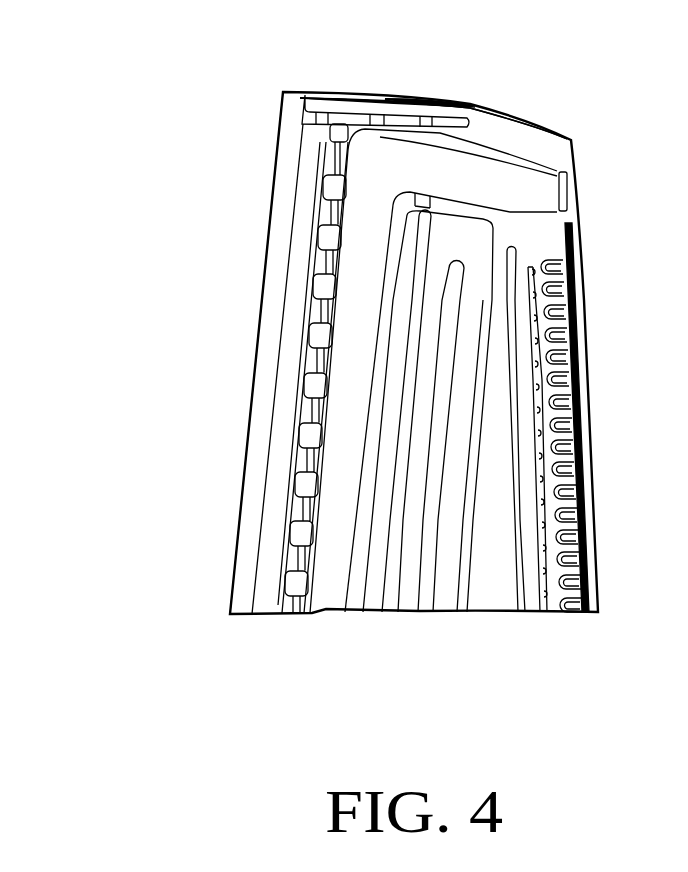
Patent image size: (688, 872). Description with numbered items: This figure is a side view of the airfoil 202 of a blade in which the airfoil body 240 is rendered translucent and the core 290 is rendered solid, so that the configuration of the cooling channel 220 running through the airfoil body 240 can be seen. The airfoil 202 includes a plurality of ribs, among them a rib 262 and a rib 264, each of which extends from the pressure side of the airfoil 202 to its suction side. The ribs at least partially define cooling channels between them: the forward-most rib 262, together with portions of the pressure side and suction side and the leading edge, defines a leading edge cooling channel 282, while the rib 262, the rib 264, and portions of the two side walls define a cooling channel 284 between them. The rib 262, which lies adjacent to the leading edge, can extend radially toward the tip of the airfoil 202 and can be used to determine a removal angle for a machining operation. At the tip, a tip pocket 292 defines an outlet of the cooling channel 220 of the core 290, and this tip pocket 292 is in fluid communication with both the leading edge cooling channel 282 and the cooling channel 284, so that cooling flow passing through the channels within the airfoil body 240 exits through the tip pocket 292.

The airfoil 202 is at (130, 50).
The cooling channel 220 is at (292, 188).
The airfoil body 240 is at (508, 138).
The rib 262 is at (340, 210).
The rib 264 is at (372, 440).
The leading edge cooling channel 282 is at (302, 325).
The cooling channel 284 is at (385, 258).
The core 290 is at (296, 155).
The tip pocket 292 is at (367, 97).